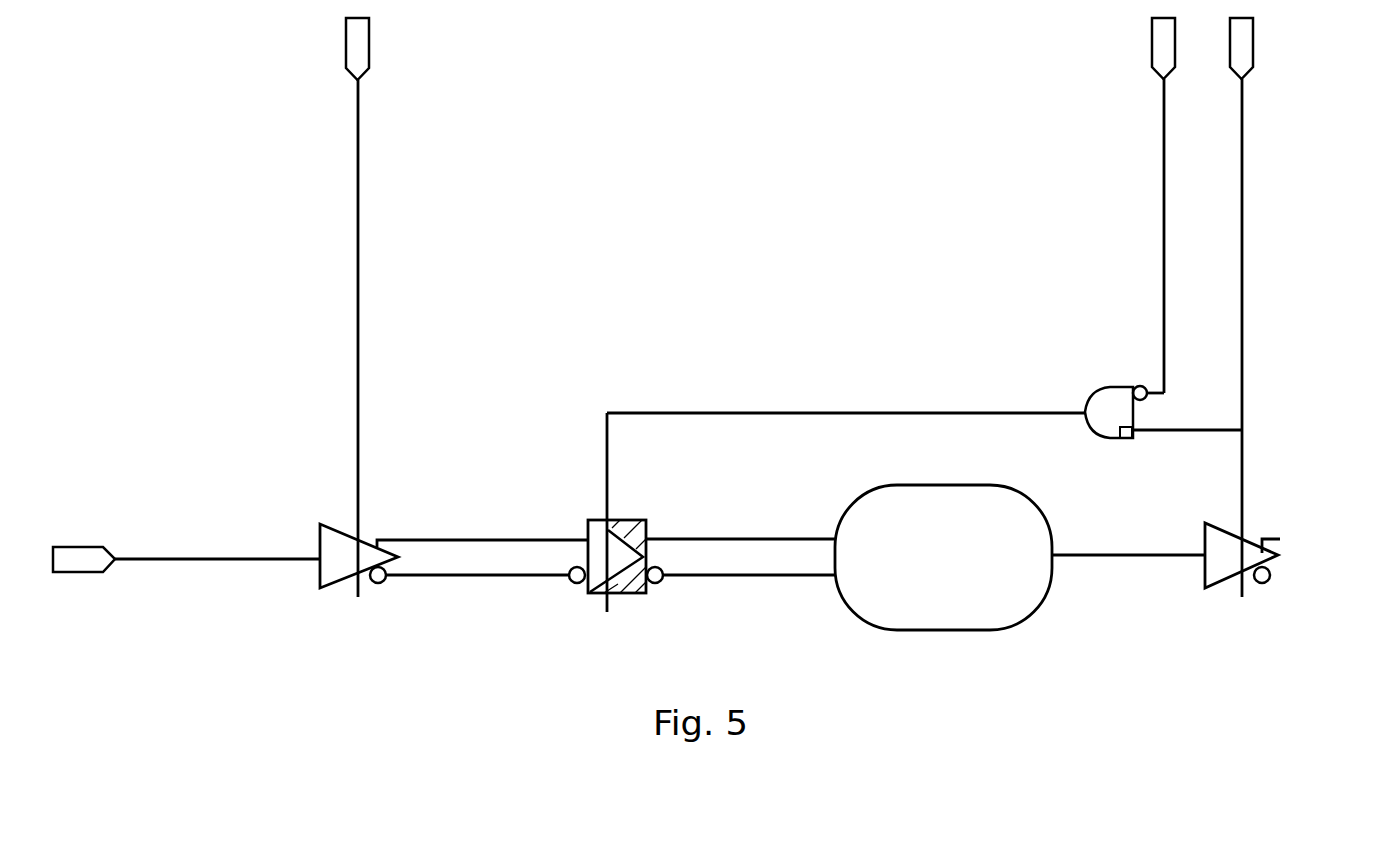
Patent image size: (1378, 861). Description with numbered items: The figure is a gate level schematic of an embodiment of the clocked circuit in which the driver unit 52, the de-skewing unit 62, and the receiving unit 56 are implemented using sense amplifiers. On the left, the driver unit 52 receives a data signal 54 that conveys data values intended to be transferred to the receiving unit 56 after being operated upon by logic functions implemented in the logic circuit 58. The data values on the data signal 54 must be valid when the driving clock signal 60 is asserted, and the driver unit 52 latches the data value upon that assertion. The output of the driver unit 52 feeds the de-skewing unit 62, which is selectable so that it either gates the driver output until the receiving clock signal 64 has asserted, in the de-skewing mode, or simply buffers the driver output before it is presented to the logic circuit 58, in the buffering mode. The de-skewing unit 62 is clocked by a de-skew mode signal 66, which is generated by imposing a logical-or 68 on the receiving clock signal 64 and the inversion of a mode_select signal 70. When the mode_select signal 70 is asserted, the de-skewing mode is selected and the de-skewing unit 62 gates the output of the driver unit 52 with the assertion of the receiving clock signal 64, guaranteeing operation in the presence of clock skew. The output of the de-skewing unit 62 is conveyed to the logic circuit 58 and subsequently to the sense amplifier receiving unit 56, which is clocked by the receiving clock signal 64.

The driver unit 52 is at (328, 522).
The data signal 54 is at (235, 561).
The receiving unit 56 is at (1218, 589).
The logic circuit 58 is at (968, 630).
The driving clock signal 60 is at (360, 352).
The de-skewing unit 62 is at (622, 519).
The receiving clock signal 64 is at (1244, 390).
The de-skew mode signal 66 is at (893, 412).
The logical-or 68 is at (1120, 385).
The mode_select signal 70 is at (1160, 258).